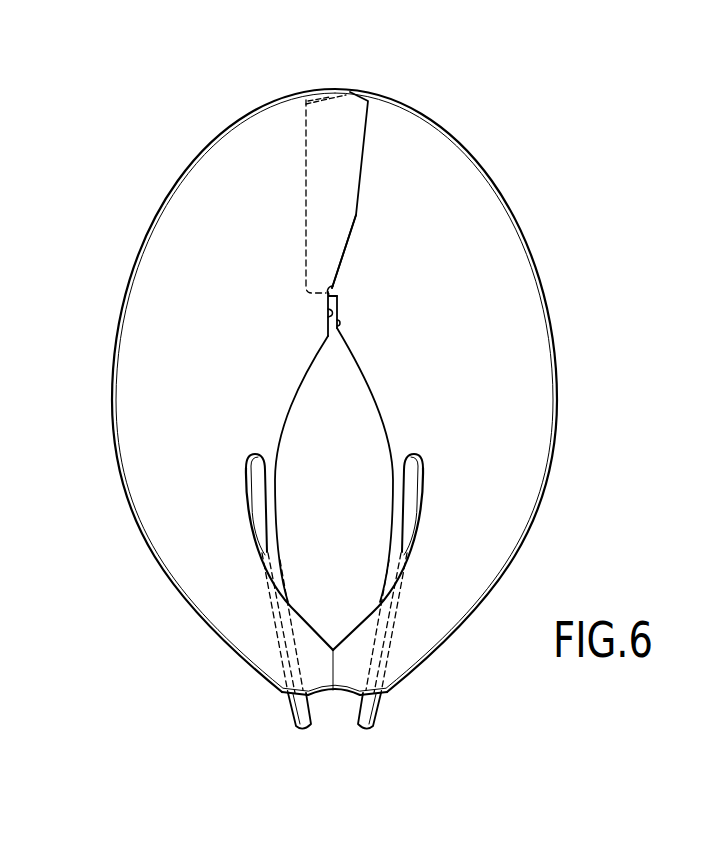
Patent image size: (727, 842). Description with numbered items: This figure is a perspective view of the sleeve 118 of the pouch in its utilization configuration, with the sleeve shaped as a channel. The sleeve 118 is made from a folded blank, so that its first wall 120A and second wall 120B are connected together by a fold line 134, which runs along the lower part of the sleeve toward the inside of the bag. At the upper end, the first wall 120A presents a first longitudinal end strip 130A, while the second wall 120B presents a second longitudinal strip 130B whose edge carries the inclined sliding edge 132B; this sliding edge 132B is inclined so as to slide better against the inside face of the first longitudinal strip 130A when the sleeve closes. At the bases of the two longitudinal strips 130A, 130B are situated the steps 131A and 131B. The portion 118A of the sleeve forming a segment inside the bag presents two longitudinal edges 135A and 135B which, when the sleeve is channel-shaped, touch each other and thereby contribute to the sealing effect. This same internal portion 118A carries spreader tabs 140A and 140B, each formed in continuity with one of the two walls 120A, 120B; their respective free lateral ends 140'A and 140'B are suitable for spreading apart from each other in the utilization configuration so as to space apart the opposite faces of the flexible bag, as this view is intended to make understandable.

The sleeve 118 is at (143, 175).
The internal portion of the sleeve 118A is at (408, 405).
The first wall 120A is at (490, 420).
The second wall 120B is at (190, 413).
The first longitudinal end strip 130A is at (317, 116).
The second longitudinal strip 130B is at (356, 114).
The step 131A is at (327, 299).
The step 131B is at (337, 283).
The sliding edge 132B is at (352, 251).
The fold line 134 is at (338, 666).
The longitudinal edge of the inside portion of the sleeve 135A is at (339, 327).
The longitudinal edge of the inside portion of the sleeve 135B is at (327, 318).
The spreader tab 140A is at (374, 713).
The spreader tab 140B is at (294, 714).
The free lateral end 140'A is at (385, 744).
The free lateral end 140'B is at (297, 744).